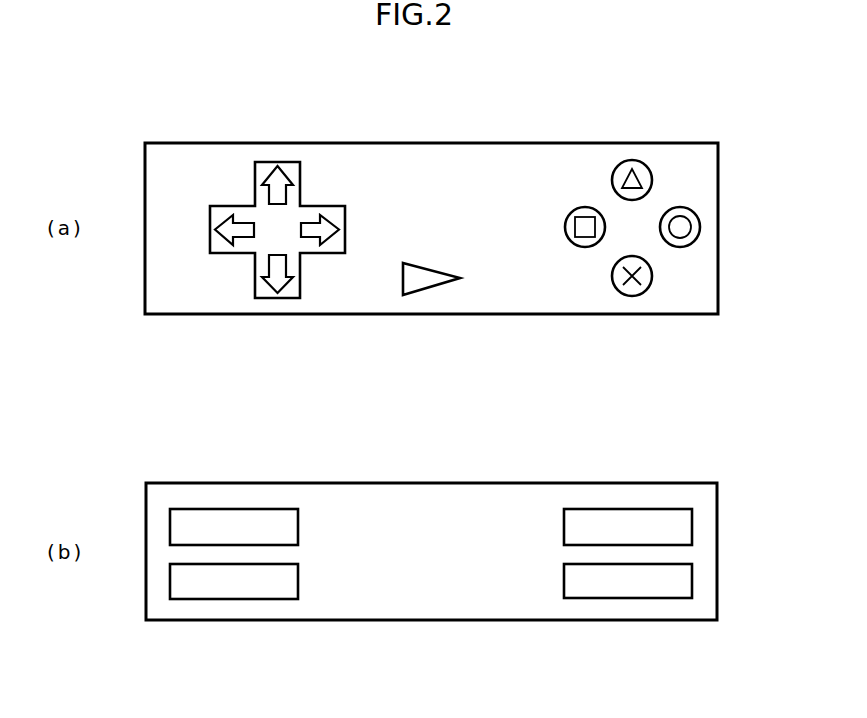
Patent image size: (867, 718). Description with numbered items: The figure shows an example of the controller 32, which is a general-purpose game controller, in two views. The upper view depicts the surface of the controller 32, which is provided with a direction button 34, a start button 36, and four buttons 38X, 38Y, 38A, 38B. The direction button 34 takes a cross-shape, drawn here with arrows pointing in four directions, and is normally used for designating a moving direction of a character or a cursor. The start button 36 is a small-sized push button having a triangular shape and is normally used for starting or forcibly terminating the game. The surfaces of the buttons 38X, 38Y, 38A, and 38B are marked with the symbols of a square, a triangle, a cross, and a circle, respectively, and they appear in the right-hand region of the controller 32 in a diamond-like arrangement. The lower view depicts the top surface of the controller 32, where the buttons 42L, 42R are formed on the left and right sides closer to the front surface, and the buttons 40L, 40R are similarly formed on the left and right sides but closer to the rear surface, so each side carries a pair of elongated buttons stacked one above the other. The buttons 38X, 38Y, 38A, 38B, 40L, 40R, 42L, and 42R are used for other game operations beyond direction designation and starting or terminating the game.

The controller 32 is at (197, 143).
The direction button 34 is at (301, 181).
The start button 36 is at (433, 287).
The button 38Y is at (612, 180).
The button 38X is at (565, 227).
The button 38A is at (612, 276).
The button 38B is at (701, 227).
The button 40L is at (232, 509).
The button 40R is at (627, 509).
The button 42L is at (236, 599).
The button 42R is at (631, 598).